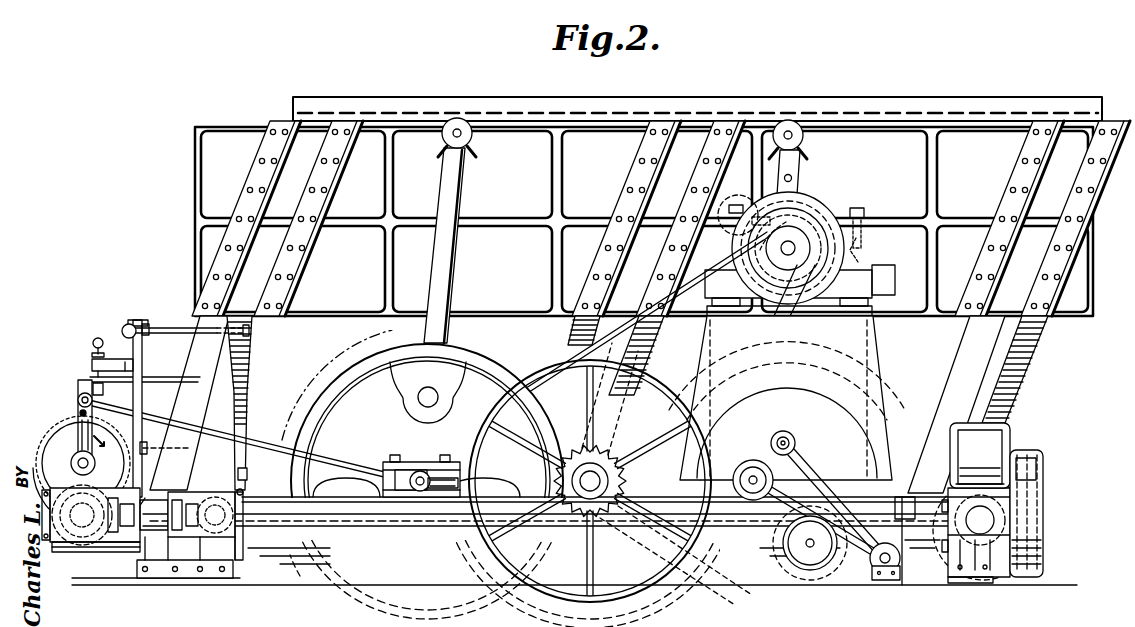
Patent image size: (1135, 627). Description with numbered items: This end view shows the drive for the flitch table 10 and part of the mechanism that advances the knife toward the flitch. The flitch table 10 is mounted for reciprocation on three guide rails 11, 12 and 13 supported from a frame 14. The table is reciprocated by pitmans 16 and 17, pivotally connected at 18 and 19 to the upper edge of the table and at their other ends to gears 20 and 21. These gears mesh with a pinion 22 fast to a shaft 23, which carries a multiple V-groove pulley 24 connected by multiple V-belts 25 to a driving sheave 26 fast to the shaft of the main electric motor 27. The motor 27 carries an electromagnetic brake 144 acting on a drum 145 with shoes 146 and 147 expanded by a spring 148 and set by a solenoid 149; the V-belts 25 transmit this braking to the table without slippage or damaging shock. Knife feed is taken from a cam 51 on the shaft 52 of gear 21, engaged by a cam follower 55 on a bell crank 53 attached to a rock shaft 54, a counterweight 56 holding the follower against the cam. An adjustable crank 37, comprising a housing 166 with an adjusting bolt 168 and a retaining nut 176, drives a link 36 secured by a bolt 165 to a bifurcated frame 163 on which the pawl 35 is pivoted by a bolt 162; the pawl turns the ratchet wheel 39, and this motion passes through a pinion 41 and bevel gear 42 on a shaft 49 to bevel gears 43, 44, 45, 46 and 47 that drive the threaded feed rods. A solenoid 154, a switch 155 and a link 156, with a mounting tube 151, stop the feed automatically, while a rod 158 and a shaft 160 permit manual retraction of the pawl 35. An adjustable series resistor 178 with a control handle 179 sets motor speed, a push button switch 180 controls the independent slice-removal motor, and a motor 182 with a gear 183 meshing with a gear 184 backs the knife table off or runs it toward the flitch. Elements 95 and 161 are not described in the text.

The flitch table 10 is at (250, 110).
The guide rail 11 is at (203, 352).
The guide rail 12 is at (586, 326).
The guide rail 13 is at (970, 340).
The frame 14 is at (636, 100).
The pitman 16 is at (464, 202).
The pitman 17 is at (806, 156).
The pivotal connection 18 is at (462, 126).
The pivotal connection 19 is at (792, 124).
The gear 20 is at (380, 428).
The gear 21 is at (686, 380).
The pinion 22 is at (600, 446).
The shaft 23 is at (582, 501).
The multiple V-groove pulley 24 is at (604, 588).
The multiple V-belts 25 is at (764, 376).
The driving sheave 26 is at (770, 302).
The main electric motor 27 is at (866, 266).
The pawl 35 is at (112, 432).
The link (pitman) 36 is at (278, 448).
The adjustable crank 37 is at (446, 458).
The ratchet wheel 39 is at (50, 456).
The pinion 41 is at (343, 530).
The bevel gear 42 is at (66, 556).
The bevel gear 43 is at (118, 556).
The bevel gear 44 is at (196, 540).
The bevel gear 45 is at (243, 552).
The bevel gear 46 is at (994, 586).
The bevel gear 47 is at (950, 554).
The shaft 49 is at (50, 498).
The cam 51 is at (812, 480).
The shaft 52 is at (755, 462).
The bell crank 53 is at (808, 466).
The rock shaft 54 is at (870, 574).
The cam follower 55 is at (792, 436).
The counterweight 56 is at (792, 556).
The gear 95 is at (306, 584).
The electromagnetic brake 144 is at (855, 204).
The drum 145 is at (792, 192).
The brake shoe 146 is at (738, 206).
The brake shoe 147 is at (858, 240).
The spring 148 is at (790, 218).
The solenoid 149 is at (892, 284).
The mounting tube 151 is at (244, 492).
The solenoid 154 is at (104, 390).
The switch 155 is at (238, 490).
The link 156 is at (247, 474).
The rod 158 is at (249, 420).
The shaft 160 is at (172, 322).
The post 161 is at (140, 318).
The bolt 162 is at (80, 413).
The bifurcated frame 163 is at (78, 388).
The bolt 165 is at (78, 401).
The housing 166 is at (420, 464).
The bolt (screw) 168 is at (450, 492).
The nut 176 is at (412, 492).
The adjustable series resistor 178 is at (88, 364).
The control handle 179 is at (92, 345).
The push button switch 180 is at (121, 332).
The motor 182 is at (998, 434).
The gear 183 is at (1046, 470).
The gear 184 is at (1046, 552).